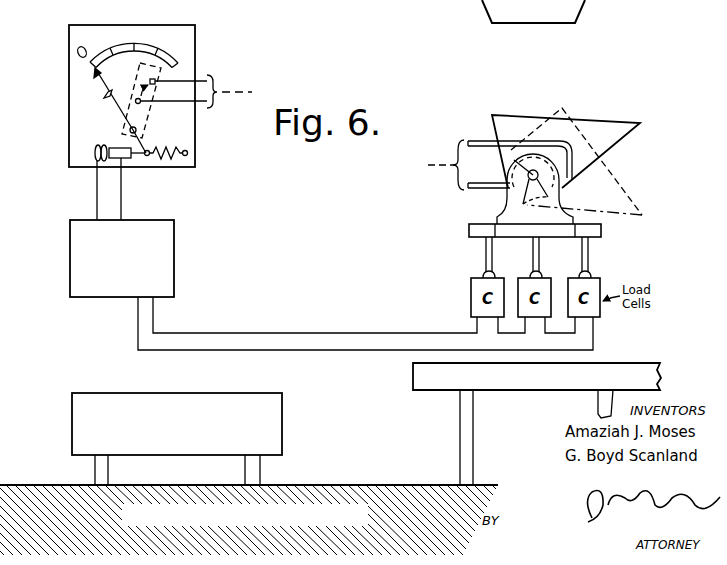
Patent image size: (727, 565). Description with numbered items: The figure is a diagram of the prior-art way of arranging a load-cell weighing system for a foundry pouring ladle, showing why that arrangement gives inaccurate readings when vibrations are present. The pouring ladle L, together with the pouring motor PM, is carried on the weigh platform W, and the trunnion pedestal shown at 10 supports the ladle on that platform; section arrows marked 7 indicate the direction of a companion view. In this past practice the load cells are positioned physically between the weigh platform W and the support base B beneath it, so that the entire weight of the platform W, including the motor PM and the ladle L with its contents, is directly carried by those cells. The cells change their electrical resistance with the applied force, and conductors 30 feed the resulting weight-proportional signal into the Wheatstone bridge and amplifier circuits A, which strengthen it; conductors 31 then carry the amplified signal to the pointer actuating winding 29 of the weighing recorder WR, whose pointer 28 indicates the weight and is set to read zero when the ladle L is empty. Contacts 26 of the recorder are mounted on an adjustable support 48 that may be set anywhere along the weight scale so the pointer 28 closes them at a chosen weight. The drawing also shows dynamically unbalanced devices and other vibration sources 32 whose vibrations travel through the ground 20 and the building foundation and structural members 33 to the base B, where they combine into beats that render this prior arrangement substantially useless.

The weighing recorder WR is at (69, 103).
The pointer 28 is at (104, 86).
The contacts 26 is at (194, 91).
The adjustable support 48 is at (150, 125).
The pointer actuating winding 29 is at (117, 147).
The conductors 31 is at (96, 203).
The Wheatstone bridge and amplifier circuits A is at (70, 255).
The conductors 30 is at (288, 342).
The dynamically unbalanced devices and other sources of vibration 32 is at (72, 433).
The ground 20 is at (338, 485).
The support base B is at (413, 378).
The building foundation and structural members 33 is at (460, 404).
The weigh platform W is at (468, 225).
The ladle trunnion pedestal 10 is at (535, 189).
The pouring motor PM is at (505, 165).
The pouring ladle L is at (627, 115).
The section line 7- 7 is at (438, 223).